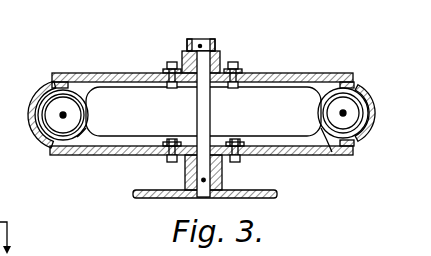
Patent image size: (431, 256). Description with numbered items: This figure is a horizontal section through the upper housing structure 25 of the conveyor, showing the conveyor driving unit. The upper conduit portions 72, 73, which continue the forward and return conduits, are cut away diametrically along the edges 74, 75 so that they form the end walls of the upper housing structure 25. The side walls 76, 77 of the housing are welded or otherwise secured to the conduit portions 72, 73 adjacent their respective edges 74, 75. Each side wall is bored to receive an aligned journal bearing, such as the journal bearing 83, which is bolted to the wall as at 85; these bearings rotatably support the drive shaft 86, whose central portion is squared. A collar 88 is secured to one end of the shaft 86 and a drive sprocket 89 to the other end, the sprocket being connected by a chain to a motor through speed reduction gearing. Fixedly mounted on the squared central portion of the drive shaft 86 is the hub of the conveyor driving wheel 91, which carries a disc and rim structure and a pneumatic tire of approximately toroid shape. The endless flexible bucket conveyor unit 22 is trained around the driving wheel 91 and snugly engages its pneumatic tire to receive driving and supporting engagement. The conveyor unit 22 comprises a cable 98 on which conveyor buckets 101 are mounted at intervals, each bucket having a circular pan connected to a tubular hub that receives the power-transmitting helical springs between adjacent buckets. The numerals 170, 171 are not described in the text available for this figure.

The endless flexible bucket conveyor unit 22 is at (72, 117).
The upper housing structure 25 is at (358, 66).
The upper conduit portion 72 is at (372, 128).
The upper conduit portion 73 is at (37, 138).
The edge 74 is at (342, 73).
The edge 75 is at (56, 82).
The side wall 76 is at (293, 73).
The side wall 77 is at (305, 156).
The journal bearing 83 is at (222, 55).
The bolt 85 is at (172, 66).
The drive shaft 86 is at (198, 60).
The collar 88 is at (205, 41).
The drive sprocket 89 is at (253, 199).
The conveyor driving wheel 91 is at (118, 85).
The cable 98 is at (60, 116).
The conveyor bucket 101 is at (77, 137).
The direction line 170 is at (0, 174).
The direction line 171 is at (0, 203).